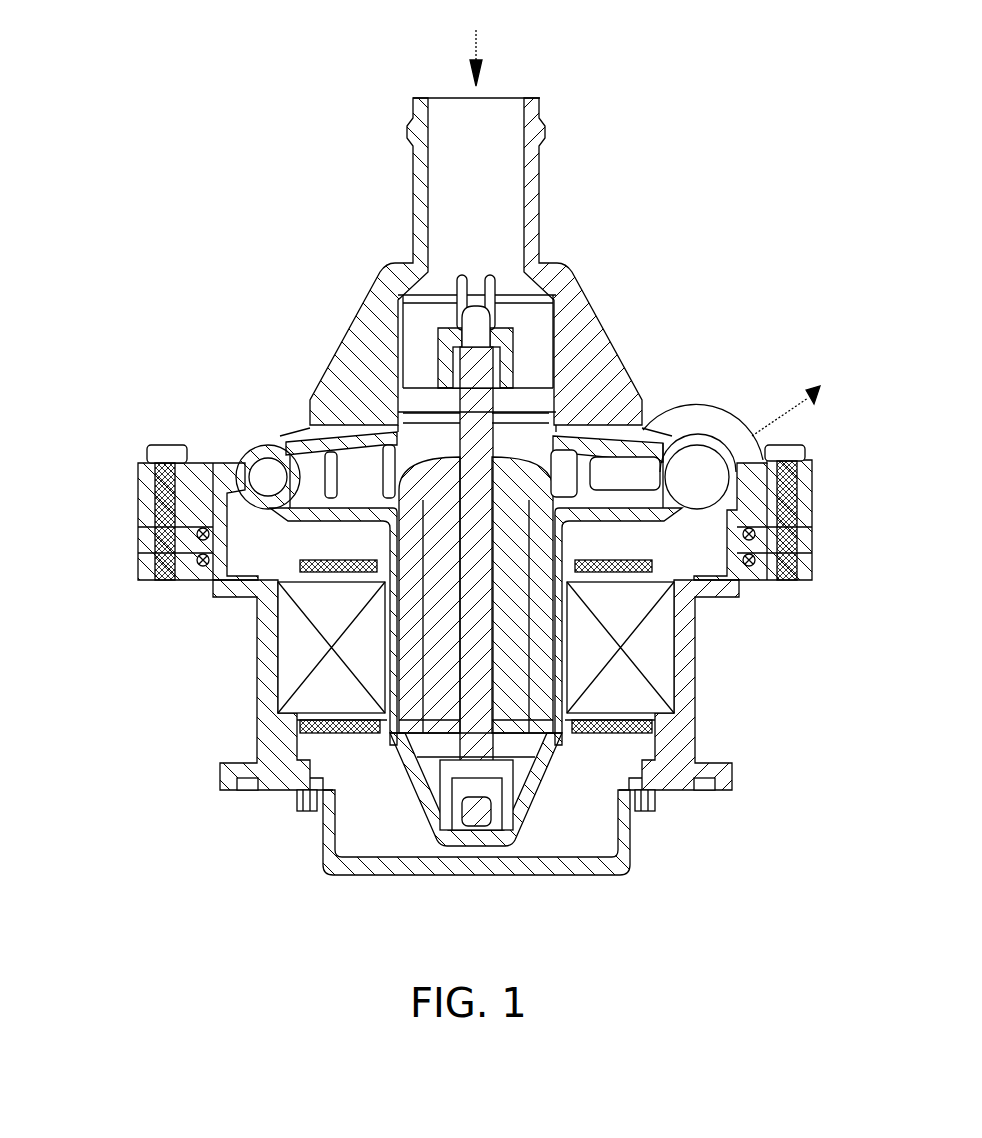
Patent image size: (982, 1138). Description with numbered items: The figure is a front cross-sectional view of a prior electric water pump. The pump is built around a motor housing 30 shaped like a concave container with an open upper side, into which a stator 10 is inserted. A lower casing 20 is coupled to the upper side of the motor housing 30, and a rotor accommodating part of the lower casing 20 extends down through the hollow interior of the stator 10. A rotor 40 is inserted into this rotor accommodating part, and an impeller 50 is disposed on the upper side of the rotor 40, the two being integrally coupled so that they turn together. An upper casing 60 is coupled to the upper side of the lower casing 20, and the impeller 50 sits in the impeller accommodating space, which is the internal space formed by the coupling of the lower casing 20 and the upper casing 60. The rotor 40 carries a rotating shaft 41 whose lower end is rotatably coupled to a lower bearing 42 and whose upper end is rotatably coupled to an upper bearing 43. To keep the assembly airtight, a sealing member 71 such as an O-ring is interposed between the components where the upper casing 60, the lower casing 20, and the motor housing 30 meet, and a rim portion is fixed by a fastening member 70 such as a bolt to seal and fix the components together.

The stator 10 is at (663, 678).
The lower casing 20 is at (137, 543).
The motor housing 30 is at (256, 681).
The rotor 40 is at (633, 812).
The rotating shaft 41 is at (320, 836).
The lower bearing 42 is at (500, 775).
The upper bearing 43 is at (515, 357).
The impeller 50 is at (300, 422).
The upper casing 60 is at (577, 266).
The fastening member 70 is at (167, 445).
The sealing member 71 is at (203, 583).